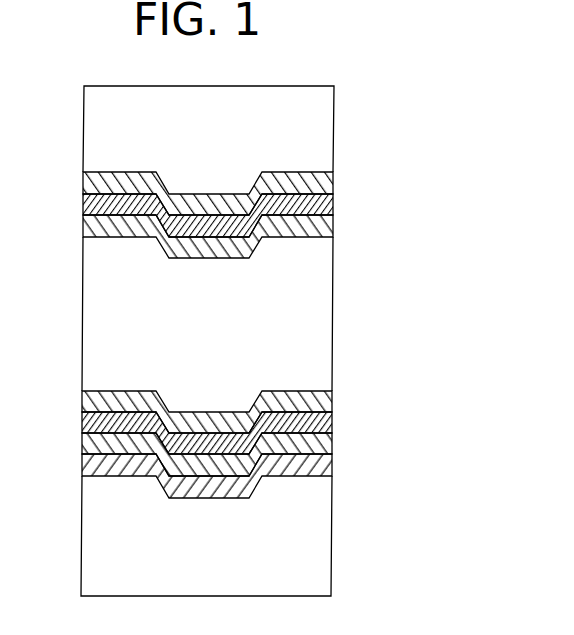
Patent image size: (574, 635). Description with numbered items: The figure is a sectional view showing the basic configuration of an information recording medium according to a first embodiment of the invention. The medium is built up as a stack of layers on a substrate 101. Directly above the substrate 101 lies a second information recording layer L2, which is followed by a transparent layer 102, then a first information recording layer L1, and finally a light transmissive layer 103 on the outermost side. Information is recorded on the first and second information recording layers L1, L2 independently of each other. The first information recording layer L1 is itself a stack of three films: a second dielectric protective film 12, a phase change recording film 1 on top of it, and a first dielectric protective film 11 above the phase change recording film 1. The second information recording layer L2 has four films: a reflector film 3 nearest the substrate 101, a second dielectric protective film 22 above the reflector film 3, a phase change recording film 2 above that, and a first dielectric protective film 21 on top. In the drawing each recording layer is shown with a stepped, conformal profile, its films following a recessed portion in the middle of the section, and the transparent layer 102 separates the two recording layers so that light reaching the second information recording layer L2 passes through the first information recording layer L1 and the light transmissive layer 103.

The substrate 101 is at (327, 553).
The transparent layer 102 is at (333, 305).
The light transmissive layer 103 is at (333, 114).
The first dielectric protective film 11 is at (333, 185).
The phase change recording film 1 is at (333, 205).
The second dielectric protective film 12 is at (245, 236).
The first dielectric protective film 21 is at (333, 402).
The phase change recording film 2 is at (333, 423).
The second dielectric protective film 22 is at (333, 445).
The reflector film 3 is at (244, 476).
The first information recording layer L1 is at (278, 203).
The second information recording layer L2 is at (277, 436).